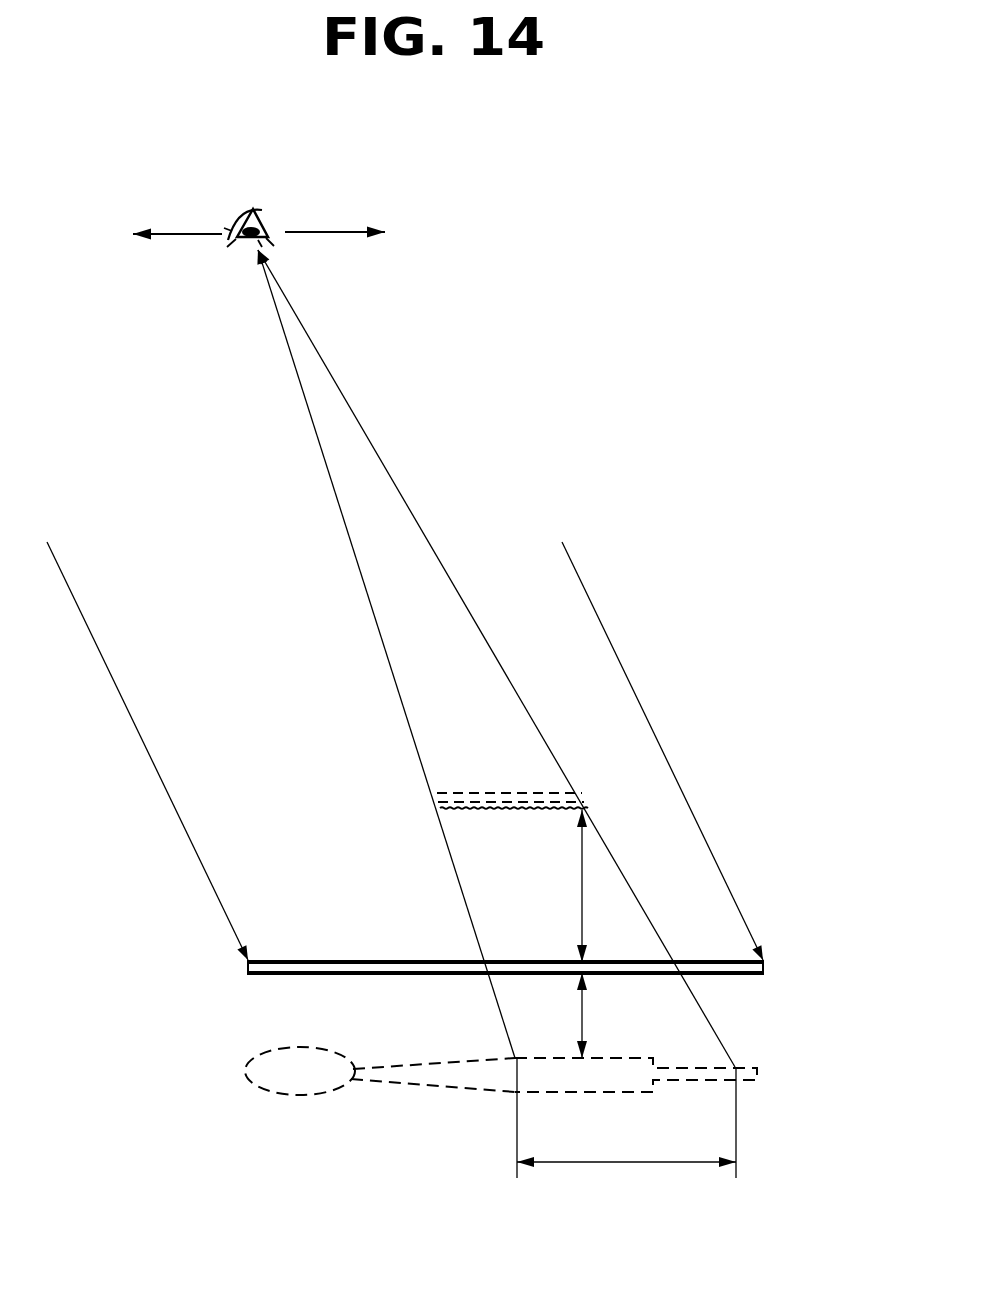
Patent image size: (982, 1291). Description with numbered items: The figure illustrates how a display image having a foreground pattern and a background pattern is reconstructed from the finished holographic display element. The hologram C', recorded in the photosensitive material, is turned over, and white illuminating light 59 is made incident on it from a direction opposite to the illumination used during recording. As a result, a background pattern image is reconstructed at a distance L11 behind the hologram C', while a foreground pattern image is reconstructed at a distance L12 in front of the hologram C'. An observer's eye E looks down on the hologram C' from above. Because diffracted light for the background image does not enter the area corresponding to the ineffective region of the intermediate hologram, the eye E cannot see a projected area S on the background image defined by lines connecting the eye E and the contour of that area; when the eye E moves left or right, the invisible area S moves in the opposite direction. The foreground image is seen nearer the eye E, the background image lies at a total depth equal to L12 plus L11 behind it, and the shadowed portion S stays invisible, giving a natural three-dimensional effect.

The eye E is at (263, 212).
The white illuminating light 59 is at (602, 625).
The hologram C' is at (560, 964).
The distance L12 is at (611, 886).
The distance L11 is at (614, 1015).
The projected area S is at (626, 1133).